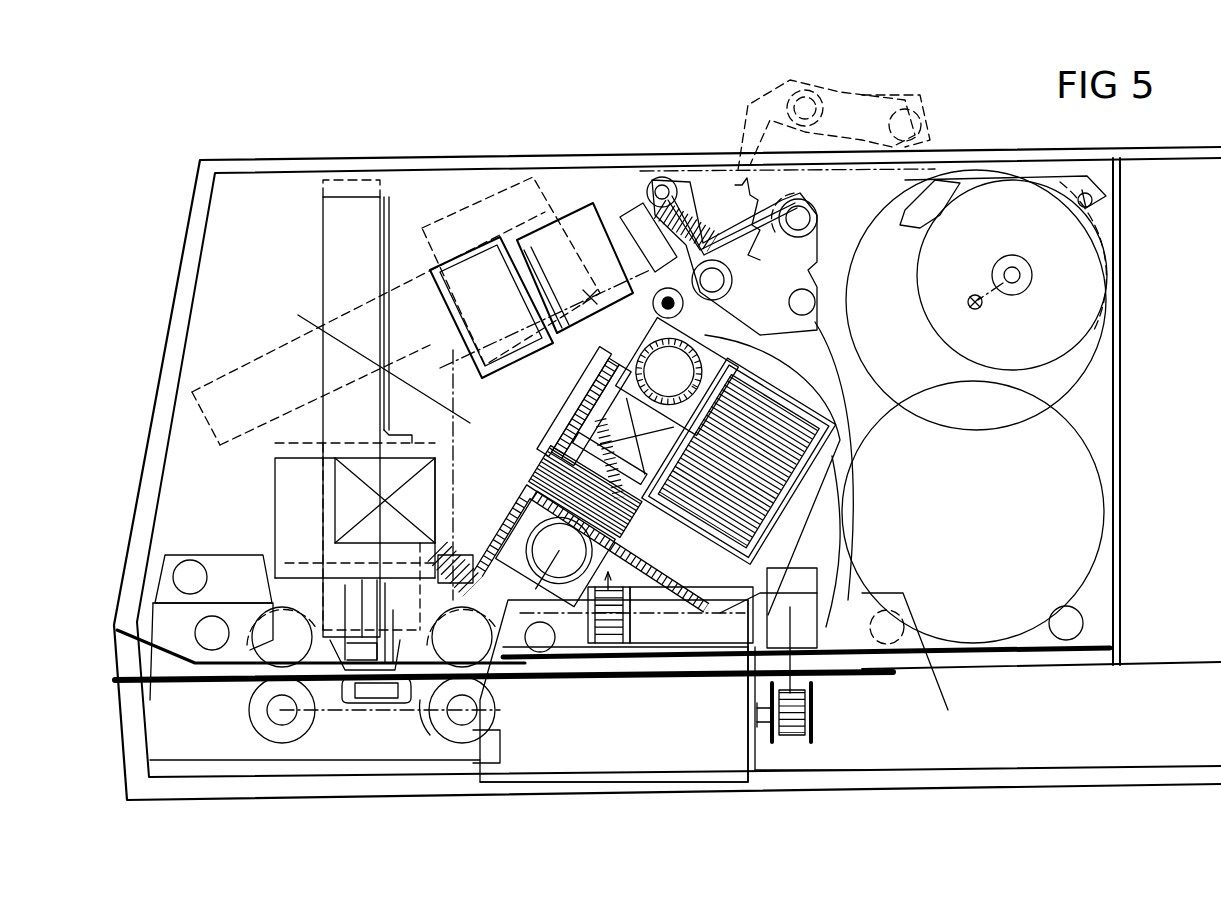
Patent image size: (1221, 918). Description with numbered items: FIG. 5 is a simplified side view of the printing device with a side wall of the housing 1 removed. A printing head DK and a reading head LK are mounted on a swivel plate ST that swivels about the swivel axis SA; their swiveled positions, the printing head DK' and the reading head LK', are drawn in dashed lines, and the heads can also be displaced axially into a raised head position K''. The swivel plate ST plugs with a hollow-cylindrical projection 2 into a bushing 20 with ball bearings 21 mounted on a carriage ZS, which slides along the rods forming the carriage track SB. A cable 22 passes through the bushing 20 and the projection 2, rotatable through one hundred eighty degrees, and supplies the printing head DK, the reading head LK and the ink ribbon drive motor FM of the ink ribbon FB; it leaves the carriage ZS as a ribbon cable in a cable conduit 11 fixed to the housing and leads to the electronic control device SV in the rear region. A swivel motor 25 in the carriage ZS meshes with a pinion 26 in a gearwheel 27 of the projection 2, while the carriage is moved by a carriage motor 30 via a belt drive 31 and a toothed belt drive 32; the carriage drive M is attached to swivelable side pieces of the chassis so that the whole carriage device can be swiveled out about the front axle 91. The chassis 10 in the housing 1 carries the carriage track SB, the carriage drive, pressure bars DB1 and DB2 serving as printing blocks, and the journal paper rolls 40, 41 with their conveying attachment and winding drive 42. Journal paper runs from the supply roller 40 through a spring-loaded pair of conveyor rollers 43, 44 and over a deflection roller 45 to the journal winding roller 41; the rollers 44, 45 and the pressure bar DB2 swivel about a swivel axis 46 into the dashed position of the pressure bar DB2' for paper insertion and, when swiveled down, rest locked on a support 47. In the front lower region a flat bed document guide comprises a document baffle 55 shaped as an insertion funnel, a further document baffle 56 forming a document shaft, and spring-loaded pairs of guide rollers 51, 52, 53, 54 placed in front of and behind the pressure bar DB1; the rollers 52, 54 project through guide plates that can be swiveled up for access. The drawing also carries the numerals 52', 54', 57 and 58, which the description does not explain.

The housing 1 is at (229, 171).
The cable conduit 11 is at (866, 700).
The journal winding roller 41 is at (890, 278).
The conveying attachment and winding drive 42 is at (956, 278).
The supply roller 40 is at (1046, 478).
The electronic control device SV is at (1192, 446).
The ink ribbon FB is at (345, 212).
The swivel axis SA is at (310, 318).
The swivel plate ST is at (510, 227).
The printing head in swiveled position DK' is at (511, 237).
The reading head LK is at (597, 241).
The carriage track SB is at (613, 243).
The conveyor roller 43 is at (647, 182).
The conveyor roller 44 is at (663, 185).
The deflection roller 45 is at (670, 232).
The swivel axis 46 is at (790, 215).
The support 47 is at (848, 198).
The pressure bar DB2 is at (771, 118).
The pressure bar in swiveled position DB2' is at (896, 102).
The bushing 20 is at (585, 440).
The ball bearings 21 is at (503, 482).
The swivel motor 25 is at (610, 391).
The pinion 26 is at (583, 398).
The gearwheel 27 is at (583, 418).
The hollow-cylindrical projection 2 is at (735, 650).
The cable 22 is at (832, 640).
The raised head position K'' is at (349, 536).
The ink ribbon drive motor FM is at (345, 493).
The front axle 91 is at (185, 585).
The plate 52' is at (213, 562).
The document baffle 55 is at (178, 657).
The roller 57 is at (210, 650).
The guide roller 52 is at (271, 725).
The guide roller 51 is at (285, 732).
The reading head in swiveled position LK' is at (336, 723).
The printing head DK is at (351, 723).
The pressure bar DB1 is at (365, 665).
The chassis 10 is at (417, 770).
The guide roller 53 is at (455, 660).
The guide roller 54 is at (462, 760).
The roller 54' is at (460, 783).
The roller 58 is at (540, 650).
The carriage ZS is at (595, 650).
The toothed belt drive 32 is at (623, 645).
The carriage motor 30 is at (683, 777).
The carriage drive M is at (722, 615).
The document baffle 56 is at (733, 660).
The belt drive 31 is at (788, 700).